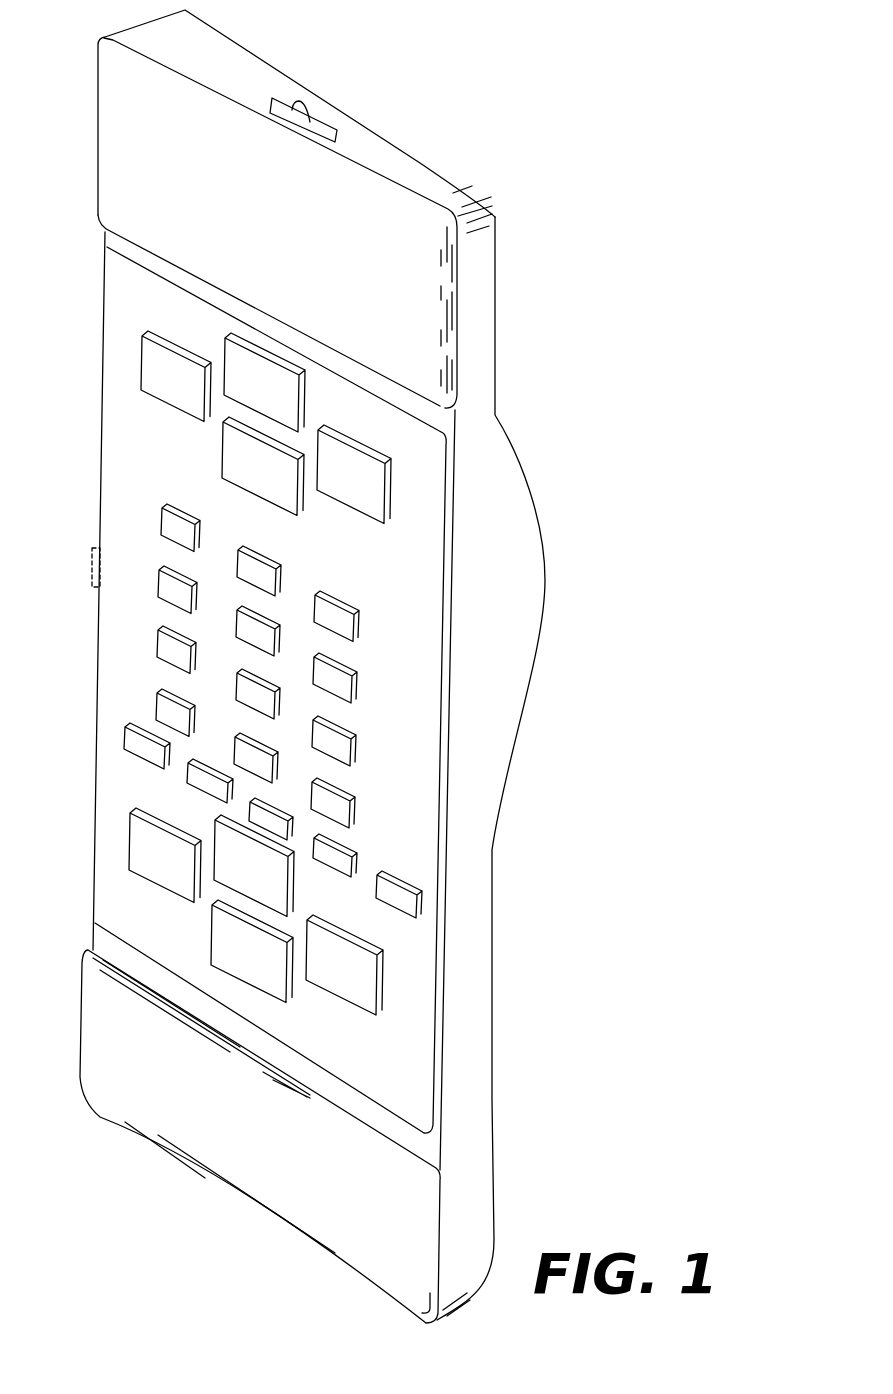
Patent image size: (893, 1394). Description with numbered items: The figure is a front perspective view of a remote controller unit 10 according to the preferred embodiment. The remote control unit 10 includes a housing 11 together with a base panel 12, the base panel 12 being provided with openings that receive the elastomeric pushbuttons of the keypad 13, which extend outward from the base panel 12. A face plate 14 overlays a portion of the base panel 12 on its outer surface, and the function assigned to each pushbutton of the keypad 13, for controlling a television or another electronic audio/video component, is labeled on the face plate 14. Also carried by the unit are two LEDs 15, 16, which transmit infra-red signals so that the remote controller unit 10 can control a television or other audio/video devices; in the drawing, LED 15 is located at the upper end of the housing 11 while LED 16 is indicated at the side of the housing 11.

The remote controller unit 10 is at (413, 666).
The housing 11 is at (480, 607).
The base panel 12 is at (433, 1147).
The keypad 13 is at (340, 618).
The face plate 14 is at (413, 875).
The LED 15 is at (302, 97).
The LED 16 is at (86, 572).